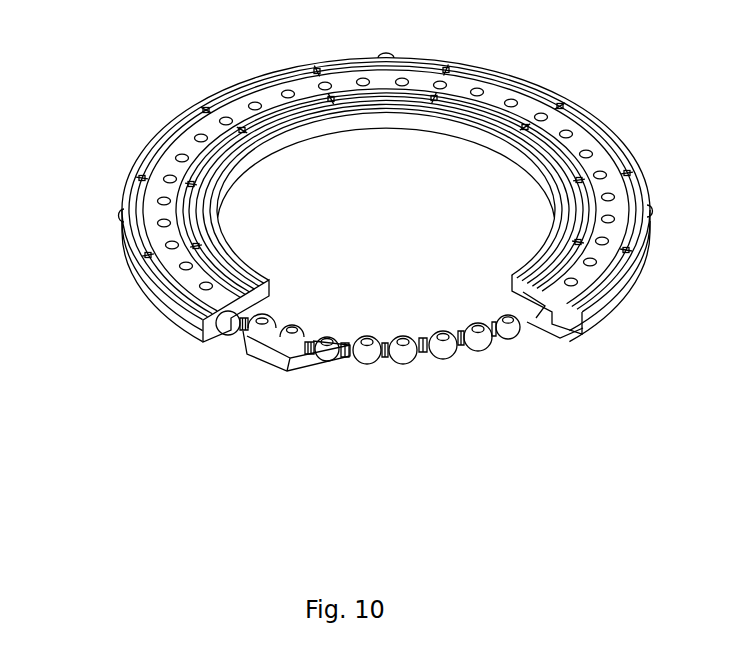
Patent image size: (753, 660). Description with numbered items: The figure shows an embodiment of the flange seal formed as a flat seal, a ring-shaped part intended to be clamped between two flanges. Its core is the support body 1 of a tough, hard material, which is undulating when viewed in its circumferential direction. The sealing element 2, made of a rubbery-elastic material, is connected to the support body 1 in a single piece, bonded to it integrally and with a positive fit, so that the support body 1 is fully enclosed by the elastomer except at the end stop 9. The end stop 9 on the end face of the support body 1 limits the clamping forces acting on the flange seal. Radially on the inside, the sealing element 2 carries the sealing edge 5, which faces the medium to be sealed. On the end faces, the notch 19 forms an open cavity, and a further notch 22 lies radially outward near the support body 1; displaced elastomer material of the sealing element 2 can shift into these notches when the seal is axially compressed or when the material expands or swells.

The support body 1 is at (405, 356).
The sealing element 2 is at (218, 140).
The sealing edge 5 is at (523, 325).
The end stop 9 is at (510, 102).
The notch 19 is at (577, 157).
The notch 22 is at (641, 210).